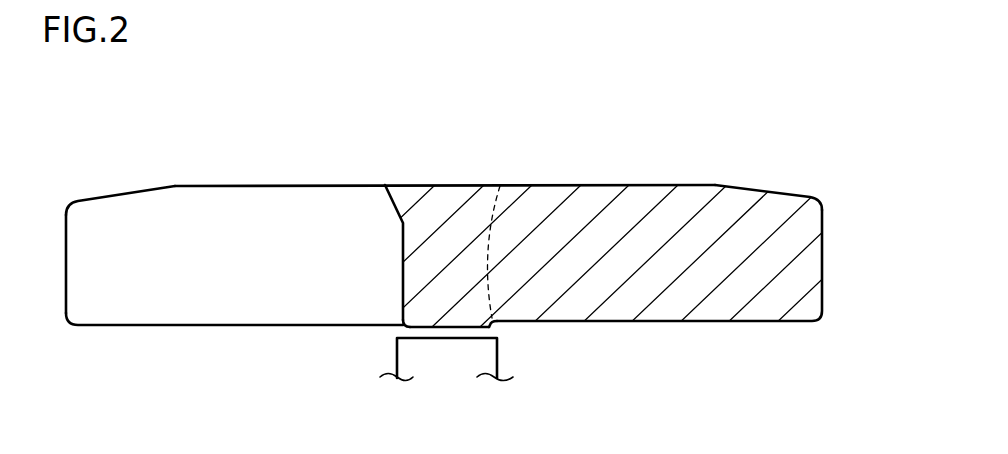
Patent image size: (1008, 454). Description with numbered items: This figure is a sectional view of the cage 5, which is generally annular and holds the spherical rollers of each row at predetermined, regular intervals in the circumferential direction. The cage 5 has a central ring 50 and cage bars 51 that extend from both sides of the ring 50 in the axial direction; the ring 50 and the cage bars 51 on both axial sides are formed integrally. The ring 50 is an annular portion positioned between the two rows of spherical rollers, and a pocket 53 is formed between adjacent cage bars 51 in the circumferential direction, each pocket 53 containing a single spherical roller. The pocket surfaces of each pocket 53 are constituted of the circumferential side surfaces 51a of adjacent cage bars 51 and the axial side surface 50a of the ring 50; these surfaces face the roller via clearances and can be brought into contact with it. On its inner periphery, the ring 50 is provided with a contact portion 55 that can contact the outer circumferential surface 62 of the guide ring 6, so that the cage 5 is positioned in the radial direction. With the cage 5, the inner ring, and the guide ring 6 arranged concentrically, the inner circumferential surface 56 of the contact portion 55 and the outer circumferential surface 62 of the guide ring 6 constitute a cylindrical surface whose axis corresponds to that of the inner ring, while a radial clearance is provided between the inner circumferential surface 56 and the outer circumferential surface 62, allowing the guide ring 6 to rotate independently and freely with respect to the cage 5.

The cage 5 is at (602, 184).
The ring 50 is at (445, 213).
The axial side surface 50a is at (400, 273).
The cage bar 51 is at (125, 193).
The circumferential side surface 51a is at (205, 207).
The pocket 53 is at (228, 327).
The contact portion 55 is at (460, 331).
The inner circumferential surface 56 is at (442, 328).
The outer circumferential surface 62 is at (427, 333).
The guide ring 6 is at (485, 357).